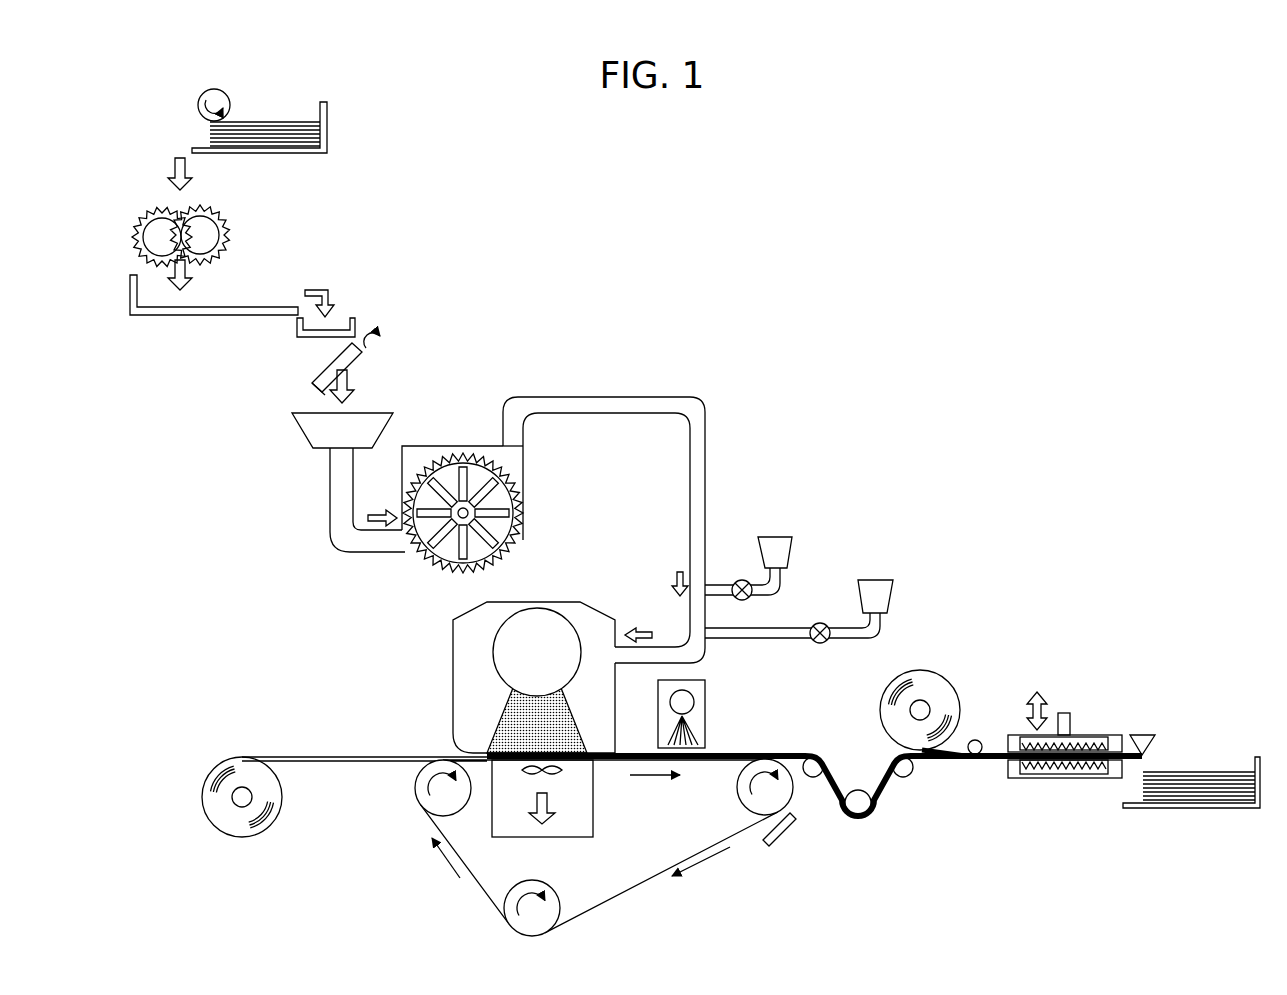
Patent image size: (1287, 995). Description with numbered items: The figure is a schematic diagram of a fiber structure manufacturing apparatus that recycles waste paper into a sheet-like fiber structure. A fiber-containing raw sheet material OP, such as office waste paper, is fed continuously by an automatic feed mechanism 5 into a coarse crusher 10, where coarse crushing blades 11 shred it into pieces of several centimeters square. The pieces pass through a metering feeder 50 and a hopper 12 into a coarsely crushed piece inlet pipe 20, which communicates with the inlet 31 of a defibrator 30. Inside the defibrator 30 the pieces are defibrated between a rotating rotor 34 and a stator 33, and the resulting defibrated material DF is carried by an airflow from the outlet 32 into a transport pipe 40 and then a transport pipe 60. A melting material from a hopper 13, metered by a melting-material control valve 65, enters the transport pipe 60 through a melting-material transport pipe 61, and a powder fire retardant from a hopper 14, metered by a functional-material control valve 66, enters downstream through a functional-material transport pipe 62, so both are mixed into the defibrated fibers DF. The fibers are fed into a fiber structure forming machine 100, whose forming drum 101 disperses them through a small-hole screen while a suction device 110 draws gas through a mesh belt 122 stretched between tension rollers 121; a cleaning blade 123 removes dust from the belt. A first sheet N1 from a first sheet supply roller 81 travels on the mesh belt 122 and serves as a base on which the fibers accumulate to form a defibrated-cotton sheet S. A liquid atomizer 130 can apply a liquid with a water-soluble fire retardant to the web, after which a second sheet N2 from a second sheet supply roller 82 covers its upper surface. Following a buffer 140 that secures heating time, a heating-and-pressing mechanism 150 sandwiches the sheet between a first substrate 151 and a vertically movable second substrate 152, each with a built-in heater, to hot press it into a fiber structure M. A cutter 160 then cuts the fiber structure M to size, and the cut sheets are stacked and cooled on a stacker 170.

The raw sheet material OP is at (248, 122).
The automatic feed mechanism 5 is at (327, 120).
The coarse crusher 10 is at (136, 213).
The coarse crushing blades 11 is at (165, 220).
The metering feeder 50 is at (163, 318).
The hopper 12 is at (305, 432).
The coarsely crushed piece inlet pipe 20 is at (330, 500).
The defibrator 30 is at (472, 489).
The inlet 31 is at (402, 553).
The outlet 32 is at (520, 440).
The stator 33 is at (528, 508).
The rotor 34 is at (505, 530).
The transport pipe 40 is at (598, 397).
The defibrated material DF is at (670, 568).
The transport pipe 60 is at (690, 642).
The melting-material control valve 65 is at (742, 580).
The hopper 13 is at (775, 537).
The melting-material transport pipe 61 is at (780, 590).
The hopper 14 is at (877, 580).
The functional-material transport pipe 62 is at (878, 634).
The functional-material control valve 66 is at (822, 645).
The fiber structure forming machine 100 is at (489, 677).
The forming drum 101 is at (495, 675).
The suction device 110 is at (595, 825).
The tension rollers 121 is at (415, 790).
The mesh belt 122 is at (517, 851).
The cleaning blade 123 is at (778, 848).
The first sheet supply roller 81 is at (215, 827).
The first sheet N1 is at (295, 756).
The defibrated-cotton sheet S is at (750, 753).
The liquid atomizer 130 is at (705, 690).
The buffer 140 is at (808, 832).
The second sheet supply roller 82 is at (947, 683).
The second sheet N2 is at (955, 750).
The heating-and-pressing mechanism 150 is at (1065, 727).
The second substrate 152 is at (1093, 735).
The first substrate 151 is at (1095, 779).
The cutter 160 is at (1142, 735).
The fiber structure M is at (1197, 772).
The stacker 170 is at (1191, 795).